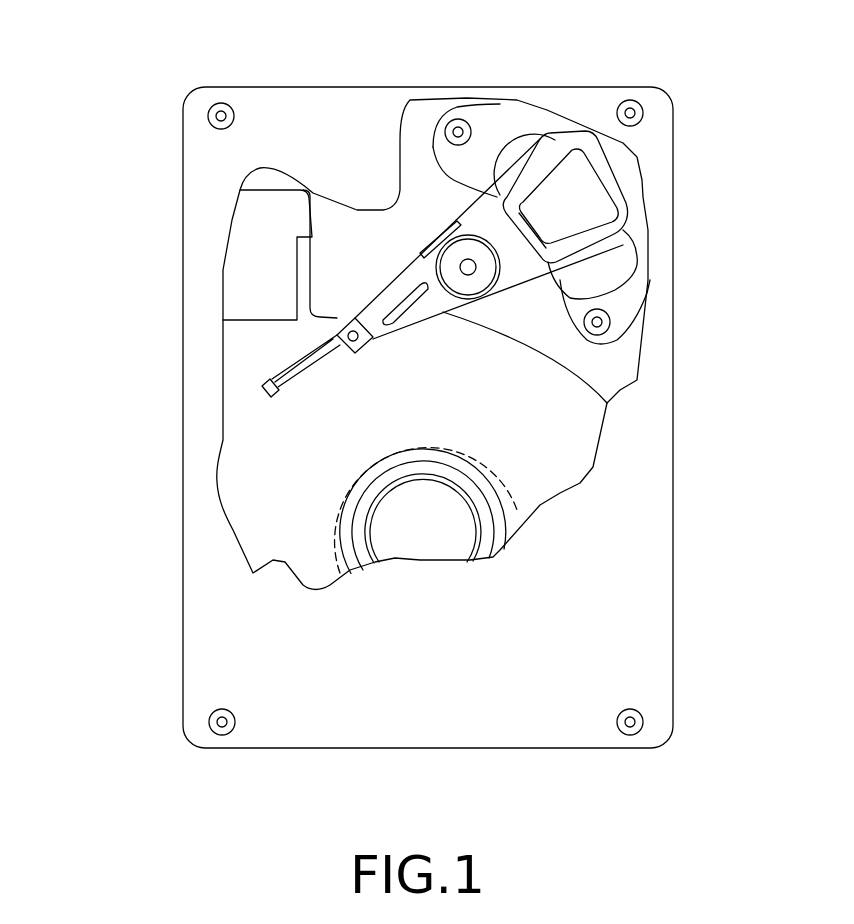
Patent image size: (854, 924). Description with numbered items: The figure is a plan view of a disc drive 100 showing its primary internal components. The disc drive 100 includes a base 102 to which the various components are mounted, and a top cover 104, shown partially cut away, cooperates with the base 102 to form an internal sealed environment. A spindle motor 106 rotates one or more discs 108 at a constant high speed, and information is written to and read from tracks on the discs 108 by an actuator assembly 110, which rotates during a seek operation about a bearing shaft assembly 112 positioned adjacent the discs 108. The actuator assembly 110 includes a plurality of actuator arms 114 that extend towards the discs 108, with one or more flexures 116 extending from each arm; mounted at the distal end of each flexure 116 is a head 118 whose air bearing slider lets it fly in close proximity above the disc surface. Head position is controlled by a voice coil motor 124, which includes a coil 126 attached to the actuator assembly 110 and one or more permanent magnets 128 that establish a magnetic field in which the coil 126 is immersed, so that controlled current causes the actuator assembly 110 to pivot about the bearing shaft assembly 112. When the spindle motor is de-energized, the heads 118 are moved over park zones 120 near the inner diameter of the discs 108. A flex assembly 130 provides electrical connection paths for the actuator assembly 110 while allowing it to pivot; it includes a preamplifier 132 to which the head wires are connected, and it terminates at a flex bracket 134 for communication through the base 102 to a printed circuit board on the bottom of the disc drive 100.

The disc drive 100 is at (155, 75).
The base 102 is at (240, 345).
The top cover 104 is at (237, 635).
The spindle motor 106 is at (420, 533).
The discs 108 is at (553, 468).
The actuator assembly 110 is at (440, 310).
The bearing shaft assembly 112 is at (470, 268).
The actuator arms 114 is at (410, 327).
The flexures 116 is at (293, 375).
The head 118 is at (265, 393).
The park zones 120 is at (327, 535).
The voice coil motor 124 is at (522, 137).
The coil 126 is at (630, 198).
The permanent magnets 128 is at (490, 158).
The flex assembly 130 is at (392, 273).
The preamplifier 132 is at (430, 220).
The flex bracket 134 is at (255, 248).